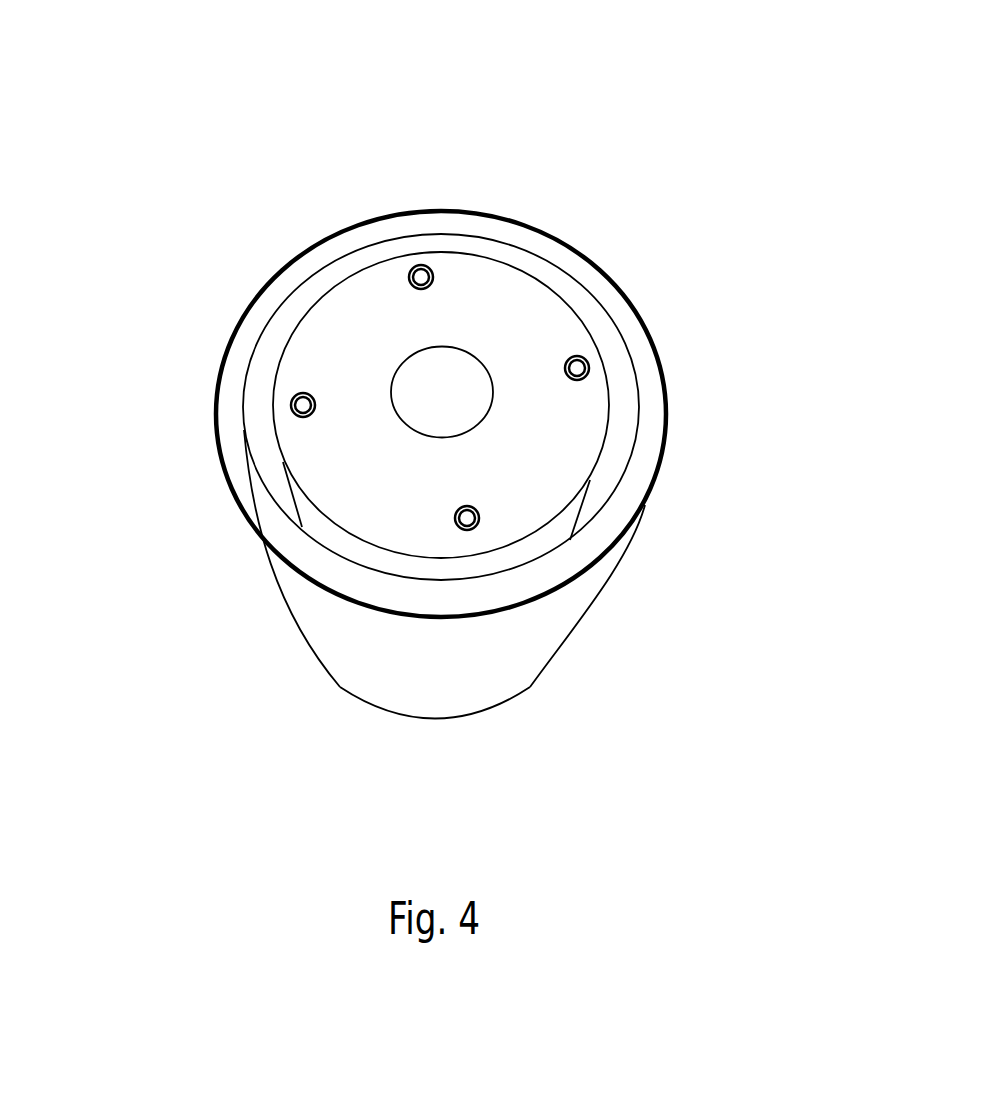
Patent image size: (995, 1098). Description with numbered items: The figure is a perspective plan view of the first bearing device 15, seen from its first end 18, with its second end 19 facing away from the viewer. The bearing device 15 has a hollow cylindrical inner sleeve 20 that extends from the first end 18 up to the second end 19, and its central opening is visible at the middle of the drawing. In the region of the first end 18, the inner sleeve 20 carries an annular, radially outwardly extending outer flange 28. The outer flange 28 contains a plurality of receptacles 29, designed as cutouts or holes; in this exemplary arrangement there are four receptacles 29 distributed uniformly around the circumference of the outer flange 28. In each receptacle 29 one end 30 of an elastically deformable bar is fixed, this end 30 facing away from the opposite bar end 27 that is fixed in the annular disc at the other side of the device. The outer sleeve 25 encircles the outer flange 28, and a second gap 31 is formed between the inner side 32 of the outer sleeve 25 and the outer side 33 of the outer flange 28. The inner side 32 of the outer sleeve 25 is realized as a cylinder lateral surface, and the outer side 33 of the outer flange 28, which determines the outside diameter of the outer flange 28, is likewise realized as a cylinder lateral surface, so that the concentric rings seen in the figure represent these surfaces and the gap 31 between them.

The bearing device 15 is at (584, 118).
The first end 18 is at (240, 264).
The second end 19 is at (558, 695).
The inner sleeve 20 is at (463, 380).
The outer sleeve 25 is at (550, 615).
The end of elastically deformable bar 27 is at (701, 446).
The outer flange 28 is at (356, 306).
The receptacles 29 is at (398, 276).
The end of bar 30 is at (420, 270).
The second gap 31 is at (312, 538).
The inner side of outer sleeve 32 is at (257, 386).
The outer side of outer flange 33 is at (286, 332).